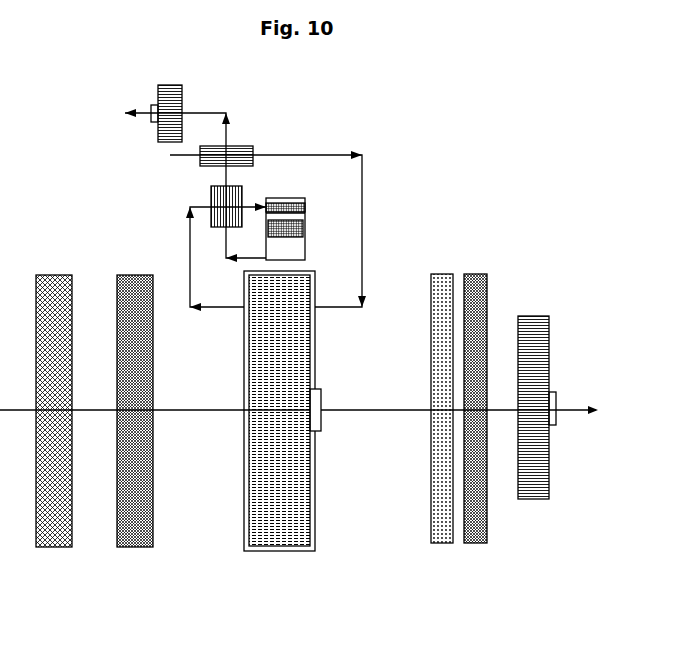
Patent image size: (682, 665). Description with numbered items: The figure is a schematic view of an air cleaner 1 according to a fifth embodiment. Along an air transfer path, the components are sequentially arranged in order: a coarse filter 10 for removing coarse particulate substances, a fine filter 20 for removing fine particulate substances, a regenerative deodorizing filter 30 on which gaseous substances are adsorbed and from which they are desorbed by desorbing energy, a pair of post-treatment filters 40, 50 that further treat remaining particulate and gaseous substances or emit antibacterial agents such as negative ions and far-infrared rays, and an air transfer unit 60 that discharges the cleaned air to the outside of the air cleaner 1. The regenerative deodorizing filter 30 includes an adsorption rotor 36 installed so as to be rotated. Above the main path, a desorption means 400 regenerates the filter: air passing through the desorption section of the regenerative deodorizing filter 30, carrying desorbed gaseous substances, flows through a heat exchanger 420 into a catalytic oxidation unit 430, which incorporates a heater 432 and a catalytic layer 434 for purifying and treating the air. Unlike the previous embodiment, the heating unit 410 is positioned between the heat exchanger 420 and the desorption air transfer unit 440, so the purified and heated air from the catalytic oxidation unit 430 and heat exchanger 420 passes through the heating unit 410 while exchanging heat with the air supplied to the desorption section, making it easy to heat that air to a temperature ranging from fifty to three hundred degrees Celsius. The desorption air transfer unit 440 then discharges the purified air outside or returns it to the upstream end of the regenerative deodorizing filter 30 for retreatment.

The air cleaner 1 is at (481, 235).
The coarse filter 10 is at (53, 547).
The fine filter 20 is at (135, 547).
The regenerative deodorizing filter 30 is at (274, 557).
The adsorption rotor 36 is at (305, 522).
The post-treatment filter 40 is at (441, 543).
The post-treatment filter 50 is at (480, 543).
The air transfer unit 60 is at (535, 499).
The desorption means 400 is at (272, 143).
The heating unit 410 is at (240, 148).
The heat exchanger 420 is at (213, 197).
The catalytic oxidation unit 430 is at (313, 213).
The heater 432 is at (297, 203).
The catalytic layer 434 is at (303, 228).
The desorption air transfer unit 440 is at (167, 95).